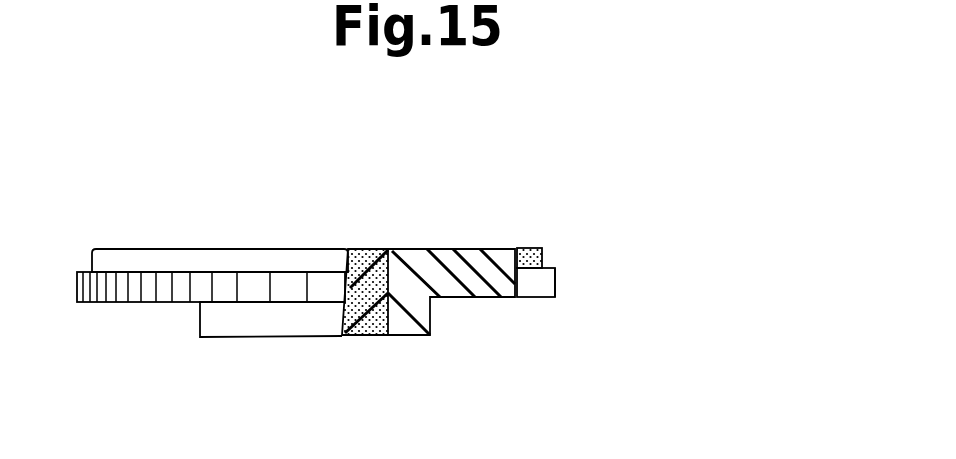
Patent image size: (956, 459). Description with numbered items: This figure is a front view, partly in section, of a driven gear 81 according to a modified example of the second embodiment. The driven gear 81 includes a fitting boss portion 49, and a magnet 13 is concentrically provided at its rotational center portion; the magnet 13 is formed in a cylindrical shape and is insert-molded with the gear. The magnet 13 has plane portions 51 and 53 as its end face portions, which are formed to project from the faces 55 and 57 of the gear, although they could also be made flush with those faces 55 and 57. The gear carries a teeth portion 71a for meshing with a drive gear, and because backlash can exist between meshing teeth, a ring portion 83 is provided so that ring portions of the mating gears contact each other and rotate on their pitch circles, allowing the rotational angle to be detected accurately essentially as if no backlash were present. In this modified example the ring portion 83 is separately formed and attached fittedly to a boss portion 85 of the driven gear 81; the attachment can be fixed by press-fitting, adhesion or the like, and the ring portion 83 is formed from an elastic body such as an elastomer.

The magnet 13 is at (348, 247).
The plane portion 51 is at (368, 246).
The driven gear 81 is at (510, 273).
The face 55 is at (487, 247).
The boss portion 85 is at (515, 247).
The ring portion 83 is at (540, 248).
The teeth portion 71a is at (556, 285).
The fitting boss portion 49 is at (437, 318).
The plane portion 53 is at (365, 337).
The face 57 is at (418, 337).